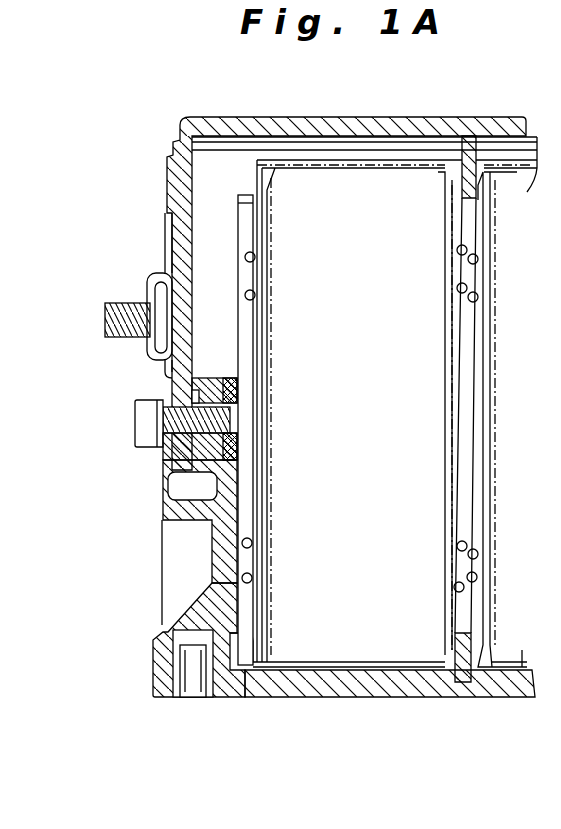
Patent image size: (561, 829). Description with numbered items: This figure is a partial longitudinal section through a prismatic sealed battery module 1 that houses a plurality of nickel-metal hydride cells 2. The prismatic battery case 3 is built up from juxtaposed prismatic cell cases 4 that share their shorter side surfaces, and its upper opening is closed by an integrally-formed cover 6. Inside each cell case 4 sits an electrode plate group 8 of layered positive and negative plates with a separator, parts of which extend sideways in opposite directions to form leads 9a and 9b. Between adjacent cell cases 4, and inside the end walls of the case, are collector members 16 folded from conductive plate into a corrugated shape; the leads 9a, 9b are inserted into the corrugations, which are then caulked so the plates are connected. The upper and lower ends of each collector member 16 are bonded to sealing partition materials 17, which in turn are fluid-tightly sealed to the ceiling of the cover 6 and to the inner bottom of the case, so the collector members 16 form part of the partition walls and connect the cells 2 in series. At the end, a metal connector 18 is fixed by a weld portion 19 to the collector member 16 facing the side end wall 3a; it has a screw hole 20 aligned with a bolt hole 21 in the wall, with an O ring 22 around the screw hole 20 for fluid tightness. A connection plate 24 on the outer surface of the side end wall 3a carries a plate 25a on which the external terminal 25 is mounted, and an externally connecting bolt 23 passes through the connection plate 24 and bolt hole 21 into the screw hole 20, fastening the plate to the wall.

The prismatic sealed battery module 1 is at (231, 88).
The cell 2 is at (243, 668).
The prismatic battery case 3 is at (160, 578).
The side end wall 3a is at (177, 196).
The prismatic cell case 4 is at (374, 153).
The cover 6 is at (318, 268).
The electrode plate group 8 is at (368, 420).
The lead 9a is at (254, 393).
The lead 9b is at (453, 364).
The collector member 16 is at (243, 313).
The sealing partition material 17 is at (468, 152).
The metal connector 18 is at (216, 376).
The weld portion 19 is at (228, 378).
The screw hole 20 is at (222, 465).
The bolt hole 21 is at (165, 452).
The O ring 22 is at (163, 478).
The externally connecting bolt 23 is at (134, 418).
The connection plate 24 is at (116, 298).
The external terminal 25 is at (125, 307).
The plate for mounting external terminal 25a is at (152, 292).